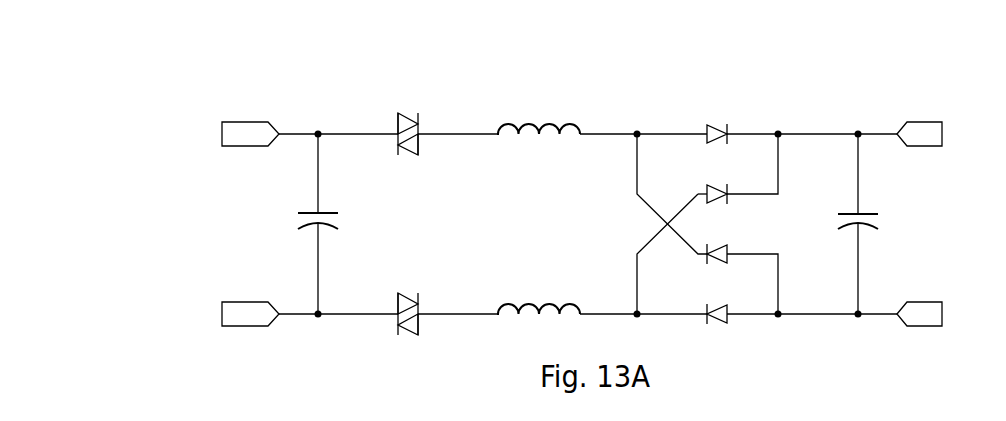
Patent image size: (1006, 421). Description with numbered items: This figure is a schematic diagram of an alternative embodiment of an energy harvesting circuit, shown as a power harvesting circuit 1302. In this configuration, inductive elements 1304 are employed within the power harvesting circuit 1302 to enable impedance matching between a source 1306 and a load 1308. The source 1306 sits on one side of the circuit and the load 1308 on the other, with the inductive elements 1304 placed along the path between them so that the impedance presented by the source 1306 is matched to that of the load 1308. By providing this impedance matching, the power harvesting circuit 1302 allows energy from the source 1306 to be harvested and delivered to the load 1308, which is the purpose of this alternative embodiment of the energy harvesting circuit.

The power harvesting circuit 1302 is at (296, 80).
The inductive elements 1304 is at (538, 203).
The source 1306 is at (295, 224).
The load 1308 is at (921, 224).